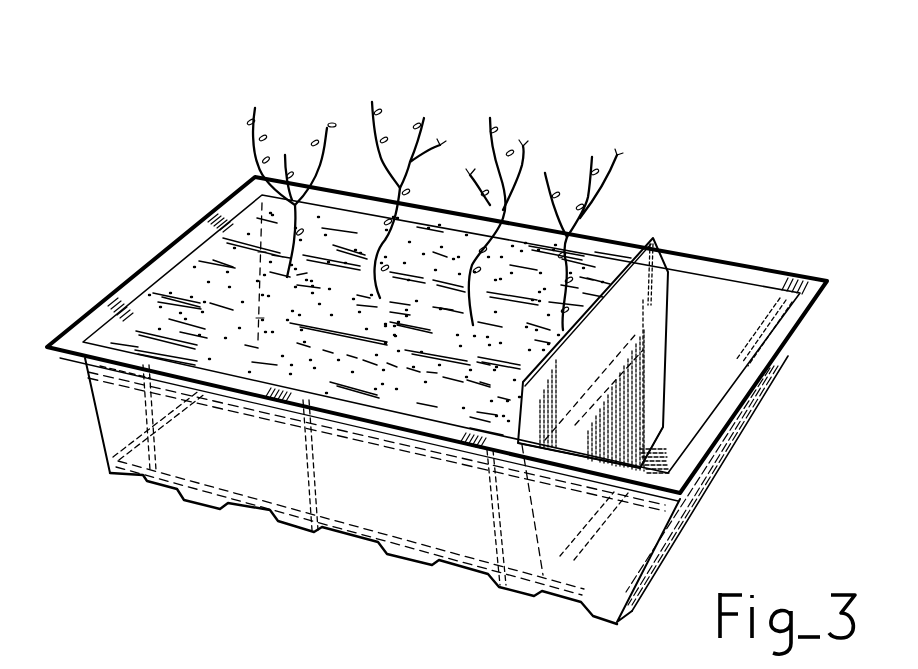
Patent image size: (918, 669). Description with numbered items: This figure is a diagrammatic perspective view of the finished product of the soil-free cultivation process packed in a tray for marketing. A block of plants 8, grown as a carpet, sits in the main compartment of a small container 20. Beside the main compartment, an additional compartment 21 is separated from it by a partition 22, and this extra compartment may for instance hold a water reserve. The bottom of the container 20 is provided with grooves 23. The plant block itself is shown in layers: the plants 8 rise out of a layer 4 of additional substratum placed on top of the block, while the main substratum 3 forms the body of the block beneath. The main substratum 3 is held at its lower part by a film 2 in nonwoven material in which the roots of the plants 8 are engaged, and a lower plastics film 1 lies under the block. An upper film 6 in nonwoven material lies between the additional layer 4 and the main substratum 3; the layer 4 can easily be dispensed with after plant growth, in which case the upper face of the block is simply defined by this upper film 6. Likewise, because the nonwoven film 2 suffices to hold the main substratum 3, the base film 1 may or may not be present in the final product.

The lower plastics film 1 is at (293, 513).
The film in nonwoven 2 is at (262, 490).
The main substratum 3 is at (200, 440).
The layer of additional substratum 4 is at (207, 273).
The upper film in nonwoven material 6 is at (127, 377).
The plants 8 is at (332, 113).
The container 20 is at (137, 270).
The additional compartment 21 is at (733, 317).
The partition 22 is at (667, 305).
The grooves 23 is at (238, 505).